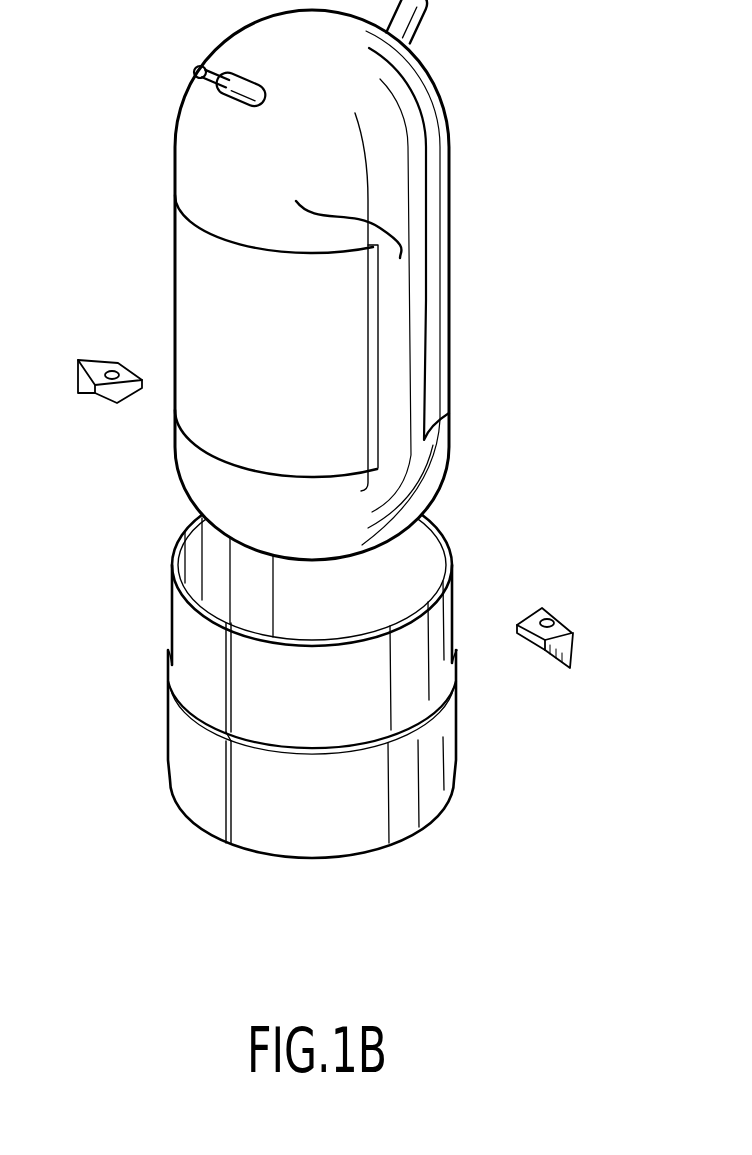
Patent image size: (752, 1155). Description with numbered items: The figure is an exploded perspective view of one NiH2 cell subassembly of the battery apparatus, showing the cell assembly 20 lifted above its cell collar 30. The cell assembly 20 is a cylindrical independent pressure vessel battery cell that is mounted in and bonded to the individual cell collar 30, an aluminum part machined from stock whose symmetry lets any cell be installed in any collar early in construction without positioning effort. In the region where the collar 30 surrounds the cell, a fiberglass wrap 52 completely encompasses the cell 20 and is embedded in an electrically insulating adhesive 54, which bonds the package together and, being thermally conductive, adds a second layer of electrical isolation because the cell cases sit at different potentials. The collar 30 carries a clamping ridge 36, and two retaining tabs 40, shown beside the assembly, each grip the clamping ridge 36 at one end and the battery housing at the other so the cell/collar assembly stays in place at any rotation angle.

The cell assembly 20 is at (439, 88).
The cell collar 30 is at (183, 808).
The clamping ridge 36 is at (232, 822).
The retaining tab 40 is at (98, 357).
The fiberglass wrap 52 is at (208, 403).
The electrically insulating adhesive 54 is at (328, 275).